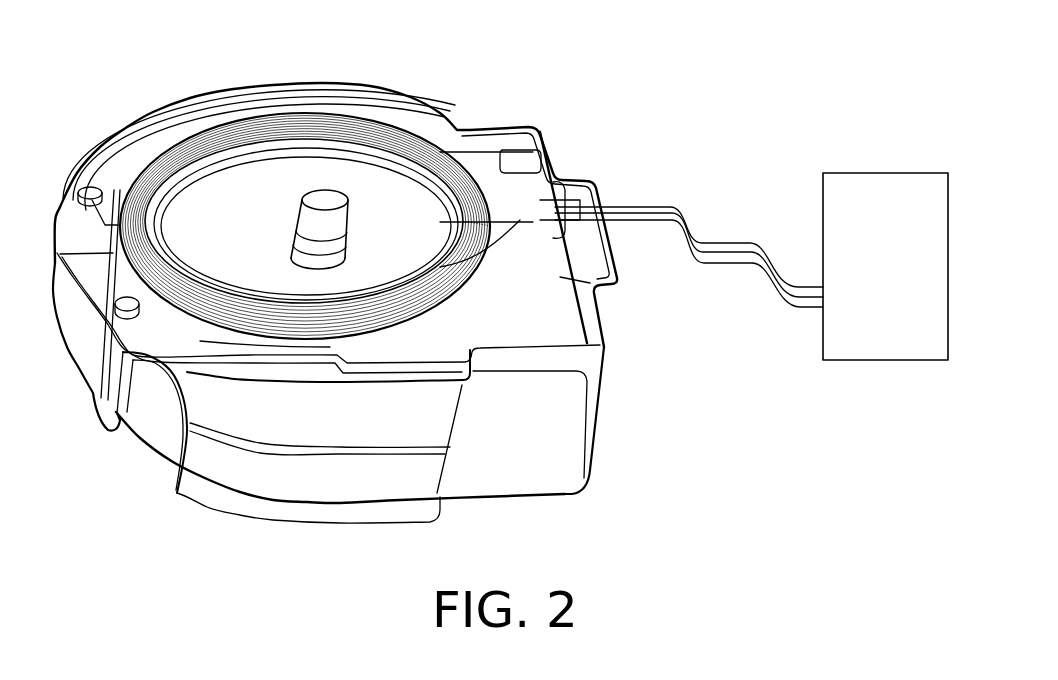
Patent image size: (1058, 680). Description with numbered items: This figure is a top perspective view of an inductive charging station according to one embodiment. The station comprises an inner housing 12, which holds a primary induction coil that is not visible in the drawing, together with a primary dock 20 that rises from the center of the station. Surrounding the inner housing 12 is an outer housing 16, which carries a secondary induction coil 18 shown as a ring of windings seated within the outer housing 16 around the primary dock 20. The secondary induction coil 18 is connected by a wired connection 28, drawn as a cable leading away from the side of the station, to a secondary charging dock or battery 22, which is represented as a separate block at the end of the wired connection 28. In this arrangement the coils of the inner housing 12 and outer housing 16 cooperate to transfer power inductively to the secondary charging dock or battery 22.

The inner housing 12 is at (577, 413).
The outer housing 16 is at (108, 150).
The secondary induction coil 18 is at (420, 150).
The primary dock 20 is at (327, 200).
The secondary charging dock or battery 22 is at (872, 173).
The wired connection 28 is at (658, 207).